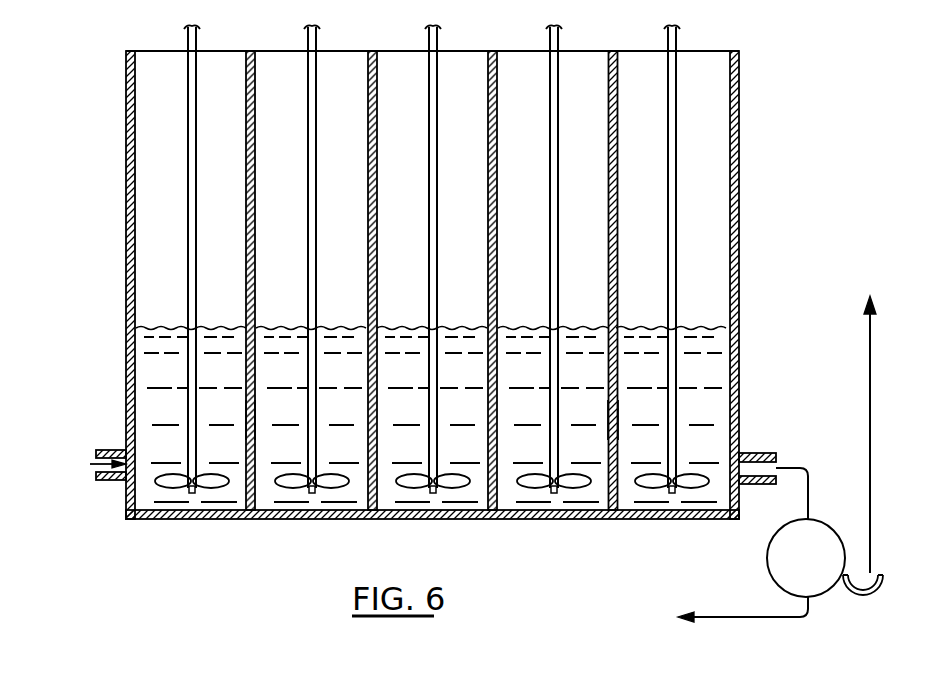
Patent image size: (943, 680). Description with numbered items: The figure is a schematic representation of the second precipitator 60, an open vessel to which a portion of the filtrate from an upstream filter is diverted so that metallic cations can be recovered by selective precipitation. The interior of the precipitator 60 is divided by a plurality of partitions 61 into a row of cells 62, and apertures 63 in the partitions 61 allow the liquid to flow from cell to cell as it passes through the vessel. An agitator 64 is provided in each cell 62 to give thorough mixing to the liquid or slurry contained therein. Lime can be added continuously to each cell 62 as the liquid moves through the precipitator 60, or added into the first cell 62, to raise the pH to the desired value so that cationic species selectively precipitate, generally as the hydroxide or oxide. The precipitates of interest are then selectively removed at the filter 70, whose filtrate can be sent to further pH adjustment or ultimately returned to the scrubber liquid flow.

The second precipitator 60 is at (740, 110).
The partitions 61 is at (378, 232).
The cells 62 is at (218, 87).
The apertures 63 is at (253, 420).
The agitators 64 is at (437, 282).
The filter 70 is at (767, 556).